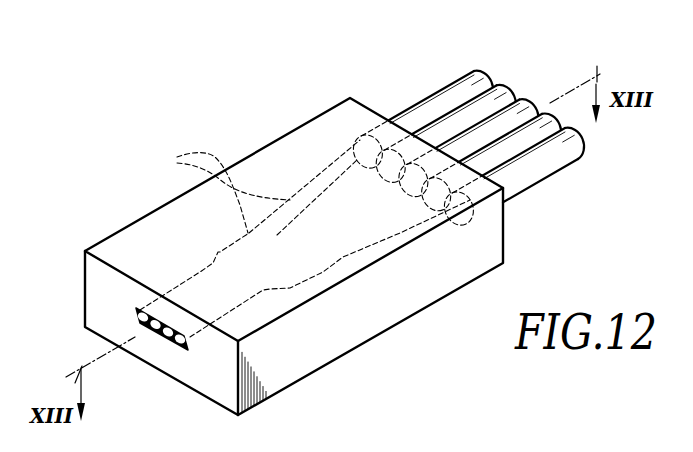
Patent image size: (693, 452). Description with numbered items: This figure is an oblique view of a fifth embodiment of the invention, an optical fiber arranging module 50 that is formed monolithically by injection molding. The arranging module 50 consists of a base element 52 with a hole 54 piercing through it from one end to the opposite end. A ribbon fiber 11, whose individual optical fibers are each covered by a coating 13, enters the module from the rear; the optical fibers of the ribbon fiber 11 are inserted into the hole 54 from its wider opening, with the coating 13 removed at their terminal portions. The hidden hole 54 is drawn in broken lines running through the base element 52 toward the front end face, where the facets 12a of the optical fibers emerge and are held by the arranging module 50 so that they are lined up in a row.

The ribbon fiber 11 is at (396, 98).
The coating 13 is at (540, 170).
The optical fiber arranging module 50 is at (257, 128).
The base element 52 is at (365, 326).
The hole 54 is at (305, 238).
The facets 12a is at (137, 314).